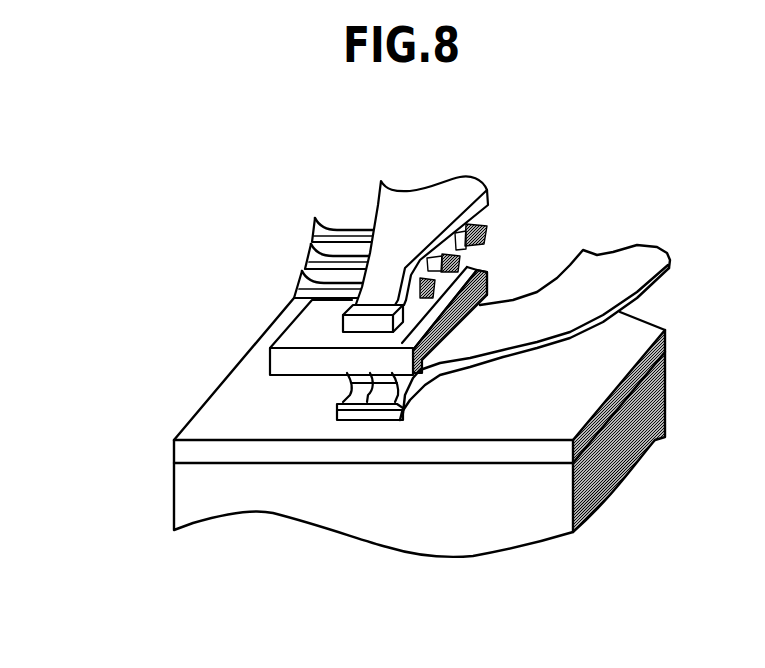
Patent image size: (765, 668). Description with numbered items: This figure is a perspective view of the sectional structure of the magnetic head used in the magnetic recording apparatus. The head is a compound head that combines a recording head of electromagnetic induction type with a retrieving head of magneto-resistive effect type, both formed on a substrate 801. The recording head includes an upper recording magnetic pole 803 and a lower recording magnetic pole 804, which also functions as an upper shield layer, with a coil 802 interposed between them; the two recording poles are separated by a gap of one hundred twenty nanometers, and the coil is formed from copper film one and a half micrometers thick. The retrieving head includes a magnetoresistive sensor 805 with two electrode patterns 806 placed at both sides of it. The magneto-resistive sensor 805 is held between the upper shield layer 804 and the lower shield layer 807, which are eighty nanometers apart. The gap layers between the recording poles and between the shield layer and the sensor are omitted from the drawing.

The substrate 801 is at (197, 490).
The coil 802 is at (323, 233).
The upper recording magnetic pole 803 is at (342, 320).
The lower recording magnetic pole 804 is at (270, 362).
The magnetoresistive sensor 805 is at (367, 405).
The electrode pattern 806 is at (342, 392).
The lower shield layer 807 is at (197, 447).